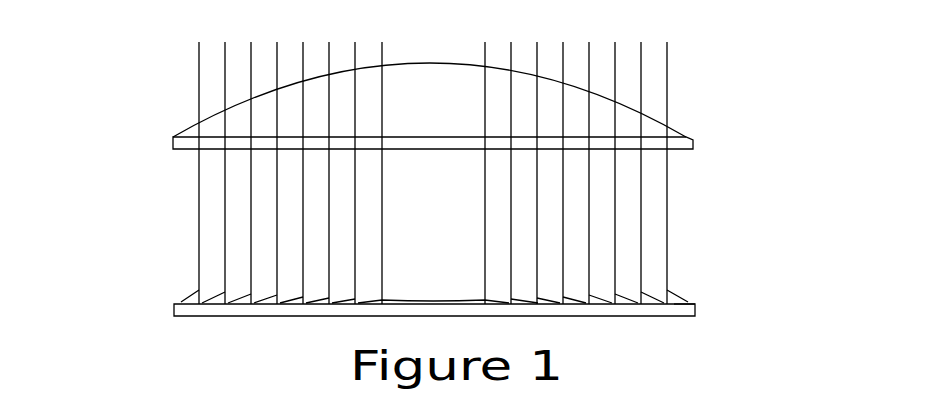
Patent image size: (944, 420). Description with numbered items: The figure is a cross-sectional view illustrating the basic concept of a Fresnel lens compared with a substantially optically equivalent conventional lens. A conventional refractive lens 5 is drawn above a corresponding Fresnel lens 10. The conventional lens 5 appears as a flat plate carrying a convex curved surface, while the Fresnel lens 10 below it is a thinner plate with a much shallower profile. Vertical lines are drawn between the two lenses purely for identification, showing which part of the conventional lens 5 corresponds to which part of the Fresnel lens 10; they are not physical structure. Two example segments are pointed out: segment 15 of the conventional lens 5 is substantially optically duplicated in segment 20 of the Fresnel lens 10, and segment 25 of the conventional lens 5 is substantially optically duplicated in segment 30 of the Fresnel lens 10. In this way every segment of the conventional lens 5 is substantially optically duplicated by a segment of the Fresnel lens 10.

The conventional refractive lens 5 is at (172, 140).
The Fresnel lens 10 is at (172, 309).
The segment of the conventional lens 15 is at (681, 130).
The segment of the Fresnel lens 20 is at (682, 290).
The segment of the conventional lens 25 is at (652, 113).
The segment of the Fresnel lens 30 is at (650, 291).